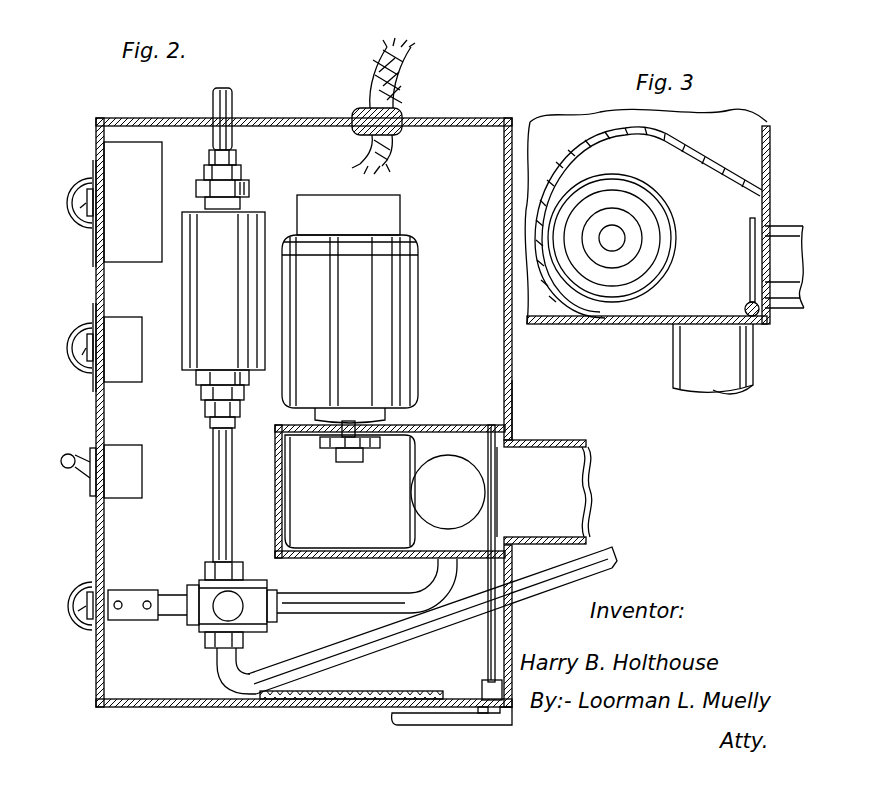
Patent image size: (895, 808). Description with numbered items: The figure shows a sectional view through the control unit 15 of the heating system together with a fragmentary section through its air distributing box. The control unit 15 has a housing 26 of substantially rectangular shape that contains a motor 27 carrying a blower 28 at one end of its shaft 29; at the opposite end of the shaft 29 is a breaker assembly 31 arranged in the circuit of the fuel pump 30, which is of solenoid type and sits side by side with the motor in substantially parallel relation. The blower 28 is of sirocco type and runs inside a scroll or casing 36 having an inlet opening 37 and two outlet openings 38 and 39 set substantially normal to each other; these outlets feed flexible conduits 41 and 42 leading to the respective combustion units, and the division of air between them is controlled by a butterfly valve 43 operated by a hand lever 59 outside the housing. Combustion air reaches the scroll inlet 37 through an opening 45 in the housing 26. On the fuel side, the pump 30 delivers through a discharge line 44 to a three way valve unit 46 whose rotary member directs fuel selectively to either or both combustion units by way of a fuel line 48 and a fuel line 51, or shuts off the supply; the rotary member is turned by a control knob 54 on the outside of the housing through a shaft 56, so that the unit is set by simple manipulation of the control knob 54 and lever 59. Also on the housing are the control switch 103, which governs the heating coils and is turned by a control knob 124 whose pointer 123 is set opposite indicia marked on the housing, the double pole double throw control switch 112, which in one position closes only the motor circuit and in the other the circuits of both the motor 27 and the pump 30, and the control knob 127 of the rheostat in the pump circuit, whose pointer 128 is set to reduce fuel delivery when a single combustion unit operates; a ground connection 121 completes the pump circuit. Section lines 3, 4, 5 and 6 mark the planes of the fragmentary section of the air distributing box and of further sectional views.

In FIG. 2, the control unit 15 is at (458, 133).
In FIG. 2, the housing 26 is at (511, 396).
In FIG. 3, the housing 26 is at (770, 130).
In FIG. 2, the motor 27 is at (412, 330).
In FIG. 2, the blower 28 is at (404, 480).
In FIG. 3, the blower 28 is at (664, 196).
In FIG. 2, the shaft 29 is at (358, 427).
In FIG. 2, the fuel pump 30 is at (252, 214).
In FIG. 2, the breaker assembly 31 is at (386, 210).
In FIG. 2, the scroll or casing 36 is at (450, 426).
In FIG. 3, the scroll or casing 36 is at (702, 150).
In FIG. 2, the inlet opening 37 is at (353, 559).
In FIG. 2, the outlet opening 38 is at (496, 470).
In FIG. 2, the outlet opening 39 is at (515, 482).
In FIG. 3, the flexible conduit 41 is at (682, 363).
In FIG. 2, the flexible conduit 42 is at (557, 444).
In FIG. 3, the flexible conduit 42 is at (787, 300).
In FIG. 2, the butterfly valve 43 is at (498, 500).
In FIG. 3, the butterfly valve 43 is at (749, 262).
In FIG. 2, the discharge line 44 is at (221, 490).
In FIG. 2, the opening 45 is at (380, 694).
In FIG. 2, the three way valve unit 46 is at (250, 617).
In FIG. 2, the fuel line 48 is at (366, 603).
In FIG. 2, the fuel line 51 is at (552, 587).
In FIG. 2, the control knob 54 is at (82, 625).
In FIG. 2, the shaft 56 is at (170, 600).
In FIG. 2, the hand lever 59 is at (410, 724).
In FIG. 2, the control switch 103 is at (128, 372).
In FIG. 2, the double pole double throw control switch 112 is at (90, 490).
In FIG. 2, the ground connection 121 is at (118, 230).
In FIG. 2, the pointer 123 is at (86, 346).
In FIG. 2, the control knob 124 is at (73, 362).
In FIG. 2, the control knob 127 is at (80, 185).
In FIG. 2, the pointer 128 is at (84, 205).
In FIG. 2, the section line 4 is at (222, 141).
In FIG. 2, the section line 5 is at (185, 604).
In FIG. 2, the section line 6 is at (69, 423).
In FIG. 2, the section line 3 is at (431, 522).